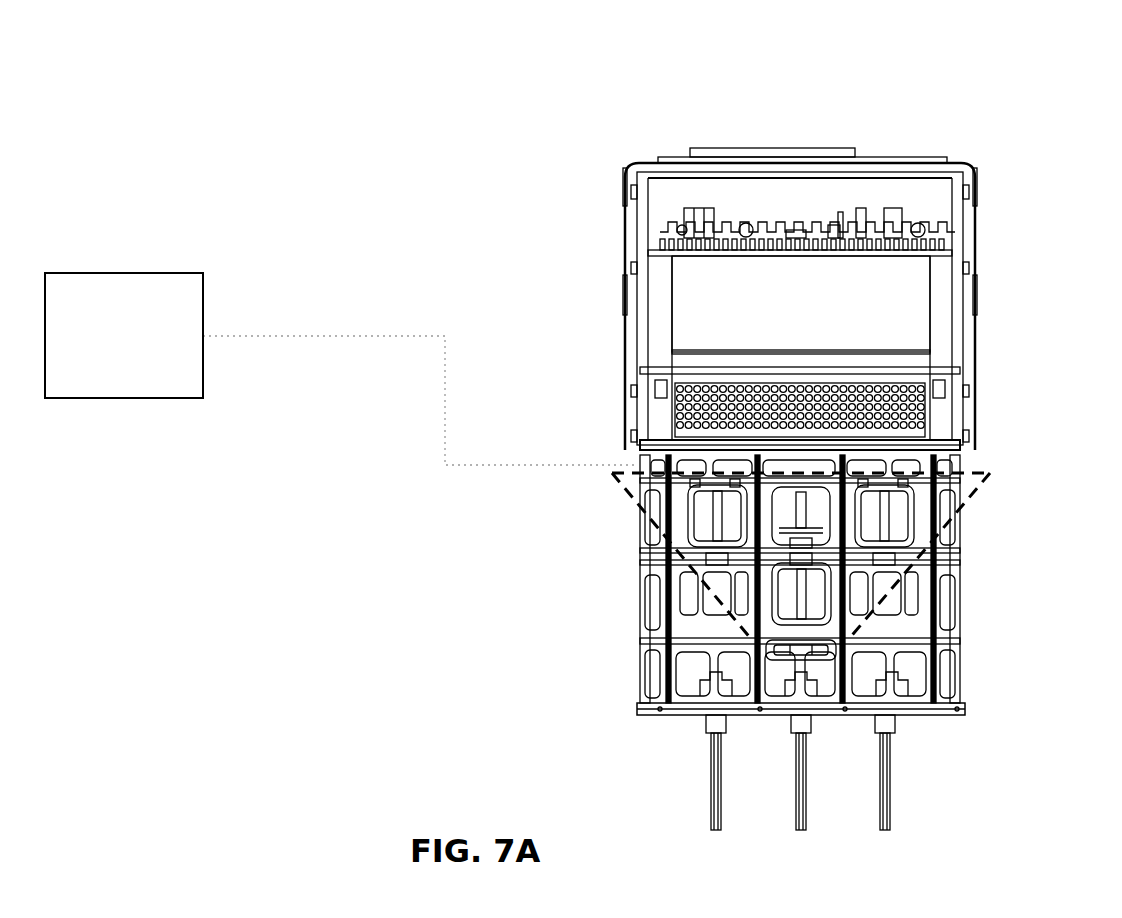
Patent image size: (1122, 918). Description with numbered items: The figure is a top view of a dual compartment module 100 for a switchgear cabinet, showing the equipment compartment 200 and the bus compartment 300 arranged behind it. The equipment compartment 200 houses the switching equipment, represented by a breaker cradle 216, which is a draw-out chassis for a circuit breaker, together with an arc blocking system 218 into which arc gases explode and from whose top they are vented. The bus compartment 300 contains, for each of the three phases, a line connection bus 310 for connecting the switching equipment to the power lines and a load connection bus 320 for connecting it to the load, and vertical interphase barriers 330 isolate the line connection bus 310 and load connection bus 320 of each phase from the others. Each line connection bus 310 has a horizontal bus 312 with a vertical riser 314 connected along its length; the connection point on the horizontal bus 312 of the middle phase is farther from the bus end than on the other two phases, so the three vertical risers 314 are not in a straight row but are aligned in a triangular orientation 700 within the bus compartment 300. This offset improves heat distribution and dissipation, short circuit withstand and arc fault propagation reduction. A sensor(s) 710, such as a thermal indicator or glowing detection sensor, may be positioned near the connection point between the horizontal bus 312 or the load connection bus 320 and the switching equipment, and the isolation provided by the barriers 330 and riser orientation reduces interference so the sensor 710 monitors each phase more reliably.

The dual compartment module 100 is at (235, 68).
The sensor(s) 710 is at (86, 273).
The equipment compartment 200 is at (612, 390).
The breaker cradle 216 is at (918, 285).
The arc blocking system 218 is at (918, 408).
The bus compartment 300 is at (975, 642).
The line connection bus 310 is at (690, 488).
The horizontal bus 312 is at (775, 704).
The vertical riser 314 is at (785, 612).
The load connection bus 320 is at (715, 800).
The vertical interphase barrier 330 is at (980, 735).
The triangular orientation 700 is at (632, 497).